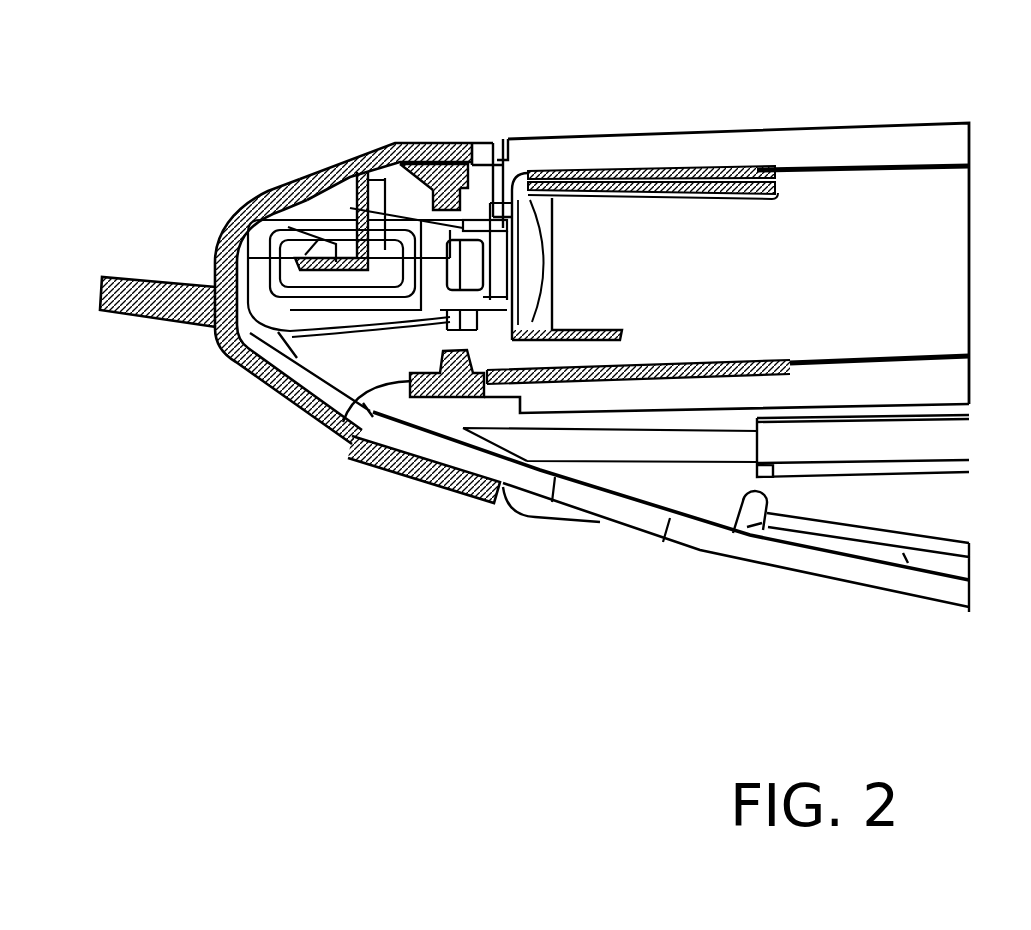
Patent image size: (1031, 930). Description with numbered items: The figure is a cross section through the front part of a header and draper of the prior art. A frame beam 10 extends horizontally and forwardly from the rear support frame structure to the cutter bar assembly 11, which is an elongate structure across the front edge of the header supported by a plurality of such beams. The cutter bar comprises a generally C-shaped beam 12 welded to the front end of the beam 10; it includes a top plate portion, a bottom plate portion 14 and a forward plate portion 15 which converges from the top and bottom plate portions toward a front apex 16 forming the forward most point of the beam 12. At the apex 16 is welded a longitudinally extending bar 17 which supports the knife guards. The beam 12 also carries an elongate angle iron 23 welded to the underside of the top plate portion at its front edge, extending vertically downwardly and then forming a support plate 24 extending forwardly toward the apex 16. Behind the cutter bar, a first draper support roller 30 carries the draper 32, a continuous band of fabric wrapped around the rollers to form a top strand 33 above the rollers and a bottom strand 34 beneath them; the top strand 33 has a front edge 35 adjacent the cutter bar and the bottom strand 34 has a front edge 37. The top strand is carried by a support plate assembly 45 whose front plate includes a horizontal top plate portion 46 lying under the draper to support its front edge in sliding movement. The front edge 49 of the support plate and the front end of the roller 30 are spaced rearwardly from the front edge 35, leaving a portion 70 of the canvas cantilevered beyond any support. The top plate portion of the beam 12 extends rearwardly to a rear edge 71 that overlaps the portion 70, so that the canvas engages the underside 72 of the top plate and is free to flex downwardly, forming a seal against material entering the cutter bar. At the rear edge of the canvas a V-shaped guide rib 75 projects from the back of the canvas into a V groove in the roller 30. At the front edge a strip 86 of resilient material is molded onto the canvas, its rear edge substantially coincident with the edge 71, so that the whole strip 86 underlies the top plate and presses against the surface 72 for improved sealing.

The beam 10 is at (757, 558).
The cutter bar assembly 11 is at (247, 403).
The C-shaped beam 12 is at (375, 467).
The bottom plate portion 14 is at (458, 493).
The forward plate portion 15 is at (214, 245).
The front apex 16 is at (213, 277).
The longitudinally extending bar 17 is at (128, 313).
The angle iron 23 is at (302, 258).
The support plate 24 is at (318, 278).
The first draper support roller 30 is at (761, 283).
The draper 32 is at (875, 148).
The top strand 33 is at (830, 165).
The bottom strand 34 is at (815, 353).
The front edge 35 is at (352, 158).
The front edge 37 is at (348, 455).
The support plate assembly 45 is at (697, 163).
The horizontal top plate portion 46 is at (610, 167).
The front edge 49 is at (522, 160).
The portion 70 is at (437, 158).
The rear edge 71 is at (477, 158).
The underside 72 is at (423, 158).
The V-shaped guide rib 75 is at (532, 200).
The strip 86 is at (517, 158).